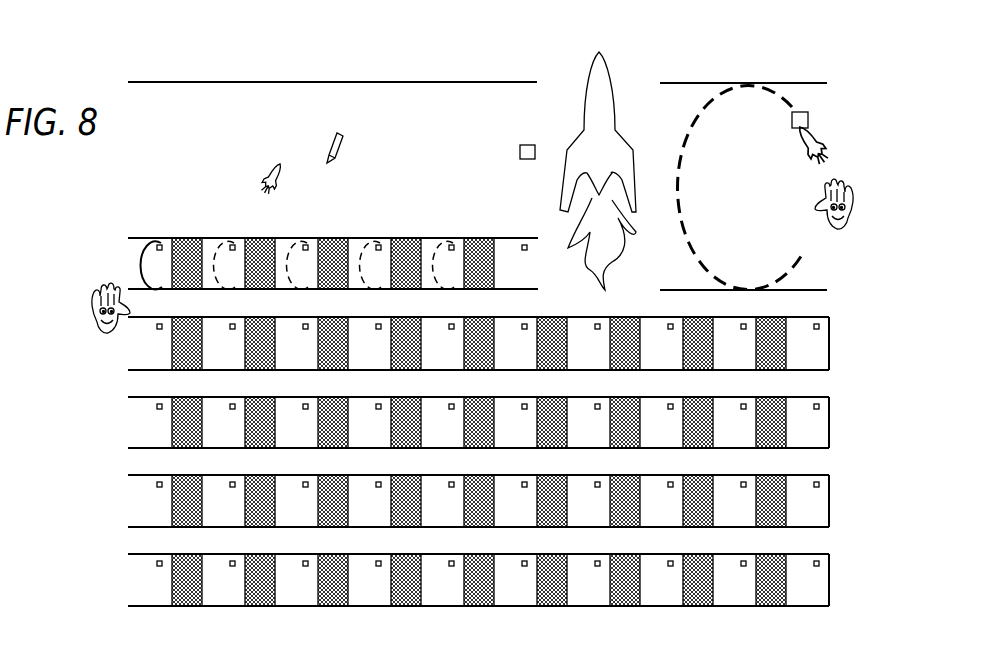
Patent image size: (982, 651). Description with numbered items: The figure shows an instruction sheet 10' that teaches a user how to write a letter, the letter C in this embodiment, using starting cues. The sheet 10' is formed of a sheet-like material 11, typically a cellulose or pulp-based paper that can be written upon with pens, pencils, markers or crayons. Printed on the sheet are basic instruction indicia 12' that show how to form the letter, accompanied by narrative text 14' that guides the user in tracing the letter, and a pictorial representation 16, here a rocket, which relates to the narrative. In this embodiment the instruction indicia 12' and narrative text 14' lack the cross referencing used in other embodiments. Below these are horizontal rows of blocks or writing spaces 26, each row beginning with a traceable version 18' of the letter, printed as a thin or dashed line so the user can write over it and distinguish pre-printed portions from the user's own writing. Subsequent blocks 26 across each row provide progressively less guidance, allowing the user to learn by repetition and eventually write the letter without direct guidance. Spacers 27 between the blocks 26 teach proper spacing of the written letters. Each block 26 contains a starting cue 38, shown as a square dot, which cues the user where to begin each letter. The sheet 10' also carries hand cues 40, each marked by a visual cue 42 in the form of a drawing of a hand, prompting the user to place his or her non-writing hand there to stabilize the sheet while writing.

The instruction sheet 10' is at (133, 155).
The sheet-like material 11 is at (392, 29).
The instruction indicia 12' is at (746, 153).
The narrative text 14' is at (346, 156).
The pictorial representation 16 is at (584, 64).
The traceable version 18' is at (227, 253).
The block/writing space 26 is at (147, 250).
The spacer 27 is at (478, 325).
The starting cue 38 is at (313, 246).
The hand cue 40 is at (113, 280).
The visual cue 42 is at (95, 335).